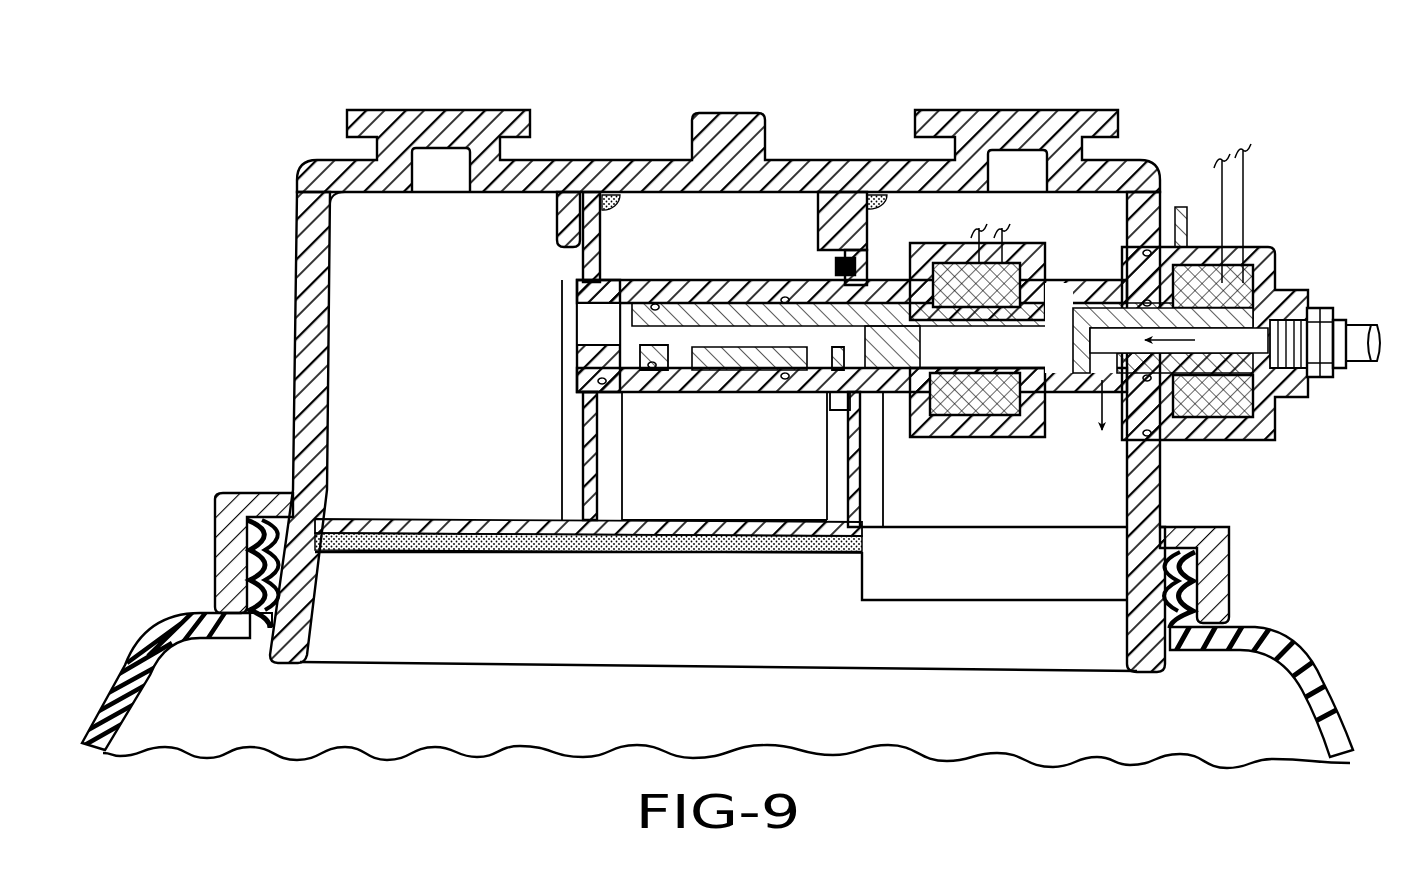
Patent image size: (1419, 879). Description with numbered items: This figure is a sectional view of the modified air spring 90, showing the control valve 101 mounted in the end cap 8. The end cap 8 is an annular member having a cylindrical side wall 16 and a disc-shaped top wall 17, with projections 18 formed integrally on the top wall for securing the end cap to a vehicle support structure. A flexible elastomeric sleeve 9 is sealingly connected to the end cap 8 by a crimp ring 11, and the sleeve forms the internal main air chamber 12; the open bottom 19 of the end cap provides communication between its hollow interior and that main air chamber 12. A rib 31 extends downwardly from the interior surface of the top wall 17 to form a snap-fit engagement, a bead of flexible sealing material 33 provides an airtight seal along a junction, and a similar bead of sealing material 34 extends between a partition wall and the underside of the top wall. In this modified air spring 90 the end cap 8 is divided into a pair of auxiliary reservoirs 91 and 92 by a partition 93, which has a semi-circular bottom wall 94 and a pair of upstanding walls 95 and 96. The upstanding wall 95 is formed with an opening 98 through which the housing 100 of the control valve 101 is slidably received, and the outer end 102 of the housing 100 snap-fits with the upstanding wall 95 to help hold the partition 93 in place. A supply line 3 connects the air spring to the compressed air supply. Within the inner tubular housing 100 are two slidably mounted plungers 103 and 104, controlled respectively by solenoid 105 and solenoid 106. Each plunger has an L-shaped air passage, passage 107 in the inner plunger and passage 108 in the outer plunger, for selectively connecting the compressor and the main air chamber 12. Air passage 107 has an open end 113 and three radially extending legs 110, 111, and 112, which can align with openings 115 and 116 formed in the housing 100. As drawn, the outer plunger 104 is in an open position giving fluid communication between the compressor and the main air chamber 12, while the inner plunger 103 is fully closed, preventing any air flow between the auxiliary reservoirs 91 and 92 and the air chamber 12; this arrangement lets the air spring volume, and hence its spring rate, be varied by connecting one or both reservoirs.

The supply line 3 is at (1360, 330).
The end cap 8 is at (677, 353).
The flexible elastomeric sleeve 9 is at (1332, 694).
The crimp ring 11 is at (218, 548).
The main air chamber 12 is at (1248, 718).
The cylindrical side wall 16 is at (302, 270).
The top wall 17 is at (597, 163).
The projections 18 is at (432, 112).
The open bottom 19 is at (360, 643).
The rib 31 is at (560, 235).
The bead of flexible sealing material 33 is at (560, 554).
The bead of sealing material 34 is at (616, 207).
The modified air spring 90 is at (232, 128).
The auxiliary reservoir 91 is at (500, 487).
The auxiliary reservoir 92 is at (718, 490).
The partition 93 is at (640, 547).
The semi-circular bottom wall 94 is at (765, 540).
The upstanding wall 95 is at (595, 487).
The upstanding wall 96 is at (862, 487).
The opening 98 is at (580, 352).
The housing 100 is at (730, 293).
The control valve 101 is at (1268, 450).
The outer end 102 is at (578, 305).
The plunger 103 is at (757, 318).
The plunger 104 is at (1095, 315).
The solenoid 105 is at (1000, 405).
The solenoid 106 is at (1228, 412).
The L-shaped air passage 107 is at (805, 295).
The L-shaped air passage 108 is at (1225, 335).
The radially extending leg 110 is at (681, 352).
The radially extending leg 111 is at (820, 392).
The radially extending leg 112 is at (852, 393).
The open end 113 is at (645, 372).
The opening 115 is at (878, 395).
The opening 116 is at (748, 390).